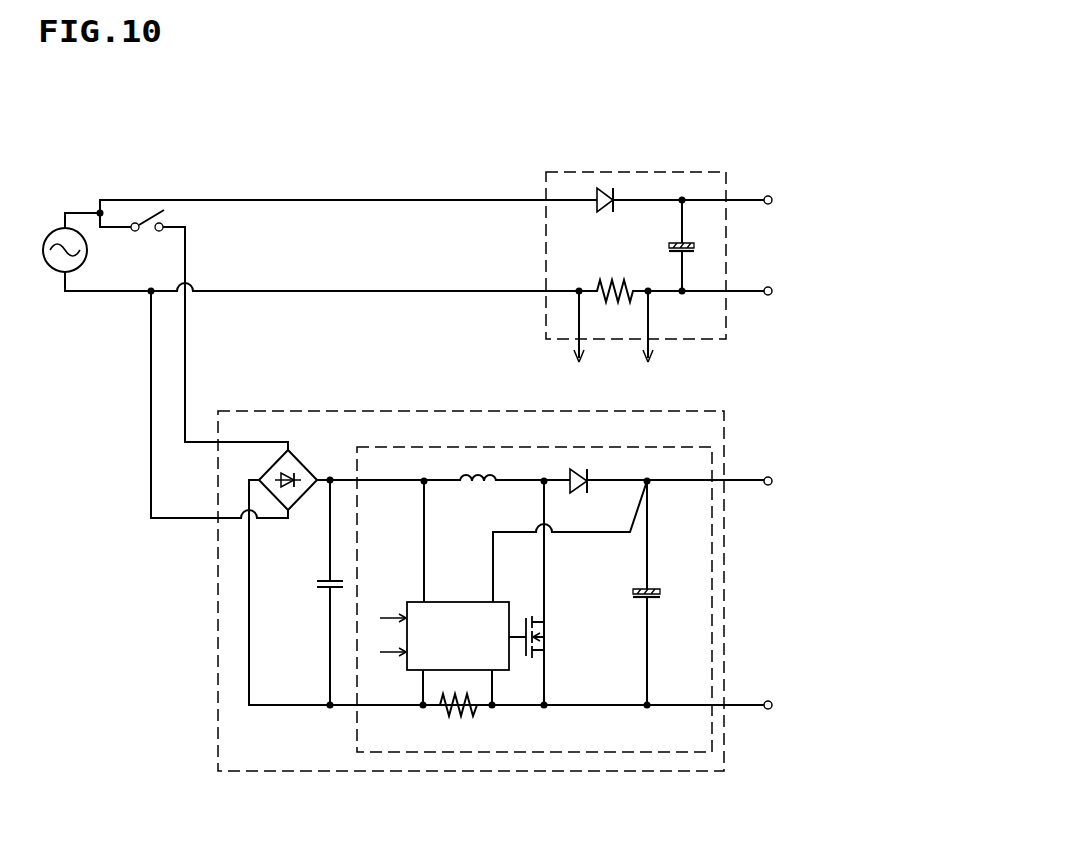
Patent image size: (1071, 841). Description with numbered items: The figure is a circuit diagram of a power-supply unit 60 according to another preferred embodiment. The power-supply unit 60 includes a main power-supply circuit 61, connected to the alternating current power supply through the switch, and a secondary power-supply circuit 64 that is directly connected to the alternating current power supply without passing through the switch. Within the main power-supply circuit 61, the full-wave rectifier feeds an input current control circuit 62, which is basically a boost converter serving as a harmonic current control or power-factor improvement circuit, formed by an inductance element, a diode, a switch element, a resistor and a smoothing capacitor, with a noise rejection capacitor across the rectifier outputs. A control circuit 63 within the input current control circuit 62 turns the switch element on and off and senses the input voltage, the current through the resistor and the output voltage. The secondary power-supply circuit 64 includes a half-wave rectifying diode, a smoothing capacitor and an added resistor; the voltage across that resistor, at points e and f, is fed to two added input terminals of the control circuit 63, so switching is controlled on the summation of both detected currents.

The power-supply unit 60 is at (236, 148).
The main power-supply circuit 61 is at (219, 403).
The input current control circuit 62 is at (398, 439).
The control circuit 63 is at (473, 600).
The secondary power-supply circuit 64 is at (563, 163).